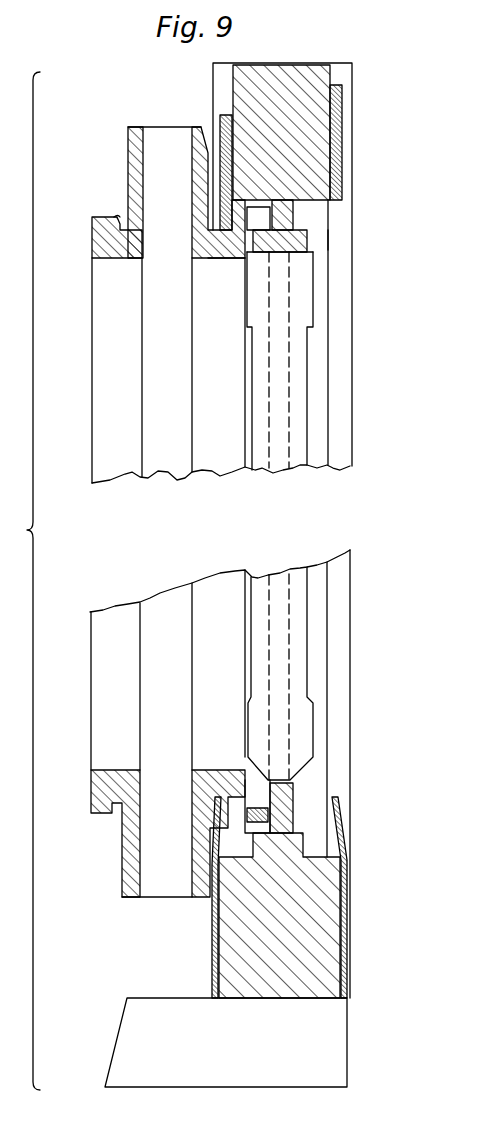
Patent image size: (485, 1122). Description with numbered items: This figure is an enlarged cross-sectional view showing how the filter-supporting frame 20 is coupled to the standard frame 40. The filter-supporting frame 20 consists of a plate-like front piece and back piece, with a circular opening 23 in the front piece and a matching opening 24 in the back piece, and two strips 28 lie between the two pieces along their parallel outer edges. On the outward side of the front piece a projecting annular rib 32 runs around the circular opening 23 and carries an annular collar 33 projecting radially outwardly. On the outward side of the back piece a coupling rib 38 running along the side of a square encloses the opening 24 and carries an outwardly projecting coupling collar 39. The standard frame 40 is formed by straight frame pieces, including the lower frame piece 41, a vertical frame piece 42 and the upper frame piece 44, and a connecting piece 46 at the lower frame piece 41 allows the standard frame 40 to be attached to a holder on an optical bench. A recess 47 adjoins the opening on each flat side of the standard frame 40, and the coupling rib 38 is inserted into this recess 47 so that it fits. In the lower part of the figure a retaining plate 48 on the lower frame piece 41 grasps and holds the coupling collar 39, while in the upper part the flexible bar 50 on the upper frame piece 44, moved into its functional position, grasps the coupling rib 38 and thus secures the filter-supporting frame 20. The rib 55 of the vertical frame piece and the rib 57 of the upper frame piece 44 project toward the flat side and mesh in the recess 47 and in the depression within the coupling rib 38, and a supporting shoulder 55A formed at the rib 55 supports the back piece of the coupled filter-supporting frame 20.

The filter-supporting frame 20 is at (120, 126).
The circular opening 23 is at (110, 259).
The opening 24 is at (207, 264).
The strips 28 is at (153, 145).
The annular rib 32 is at (123, 231).
The annular collar 33 is at (110, 221).
The coupling rib 38 is at (246, 258).
The coupling collar 39 is at (258, 200).
The standard frame 40 is at (362, 79).
The lower frame piece 41 is at (327, 938).
The vertical frame piece 42 is at (347, 585).
The upper frame piece 44 is at (284, 72).
The connecting piece 46 is at (127, 1022).
The recess 47 is at (317, 382).
The retaining plate 48 is at (345, 850).
The flexible bar 50 is at (224, 115).
The rib 55 is at (260, 457).
The supporting shoulder 55A is at (245, 312).
The rib 57 is at (308, 241).